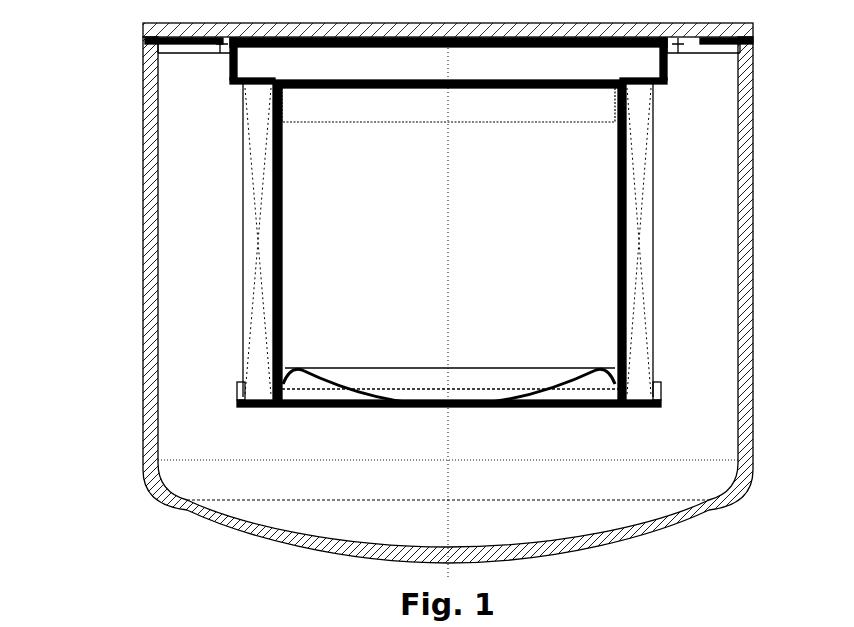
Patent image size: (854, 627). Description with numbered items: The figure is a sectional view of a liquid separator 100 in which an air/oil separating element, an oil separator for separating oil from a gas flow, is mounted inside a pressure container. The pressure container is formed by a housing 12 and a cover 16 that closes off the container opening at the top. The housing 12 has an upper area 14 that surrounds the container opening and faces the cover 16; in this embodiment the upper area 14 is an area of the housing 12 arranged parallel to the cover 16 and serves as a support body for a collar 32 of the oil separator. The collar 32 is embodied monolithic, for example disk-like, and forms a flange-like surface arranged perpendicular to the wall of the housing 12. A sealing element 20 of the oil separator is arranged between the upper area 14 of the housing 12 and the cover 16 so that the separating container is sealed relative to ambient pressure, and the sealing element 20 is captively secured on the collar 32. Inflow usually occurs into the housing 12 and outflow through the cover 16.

The liquid separator 100 is at (86, 223).
The housing 12 is at (753, 343).
The cover 16 is at (146, 38).
The sealing element 20 is at (148, 44).
The upper area 14 is at (177, 54).
The collar 32 is at (208, 46).